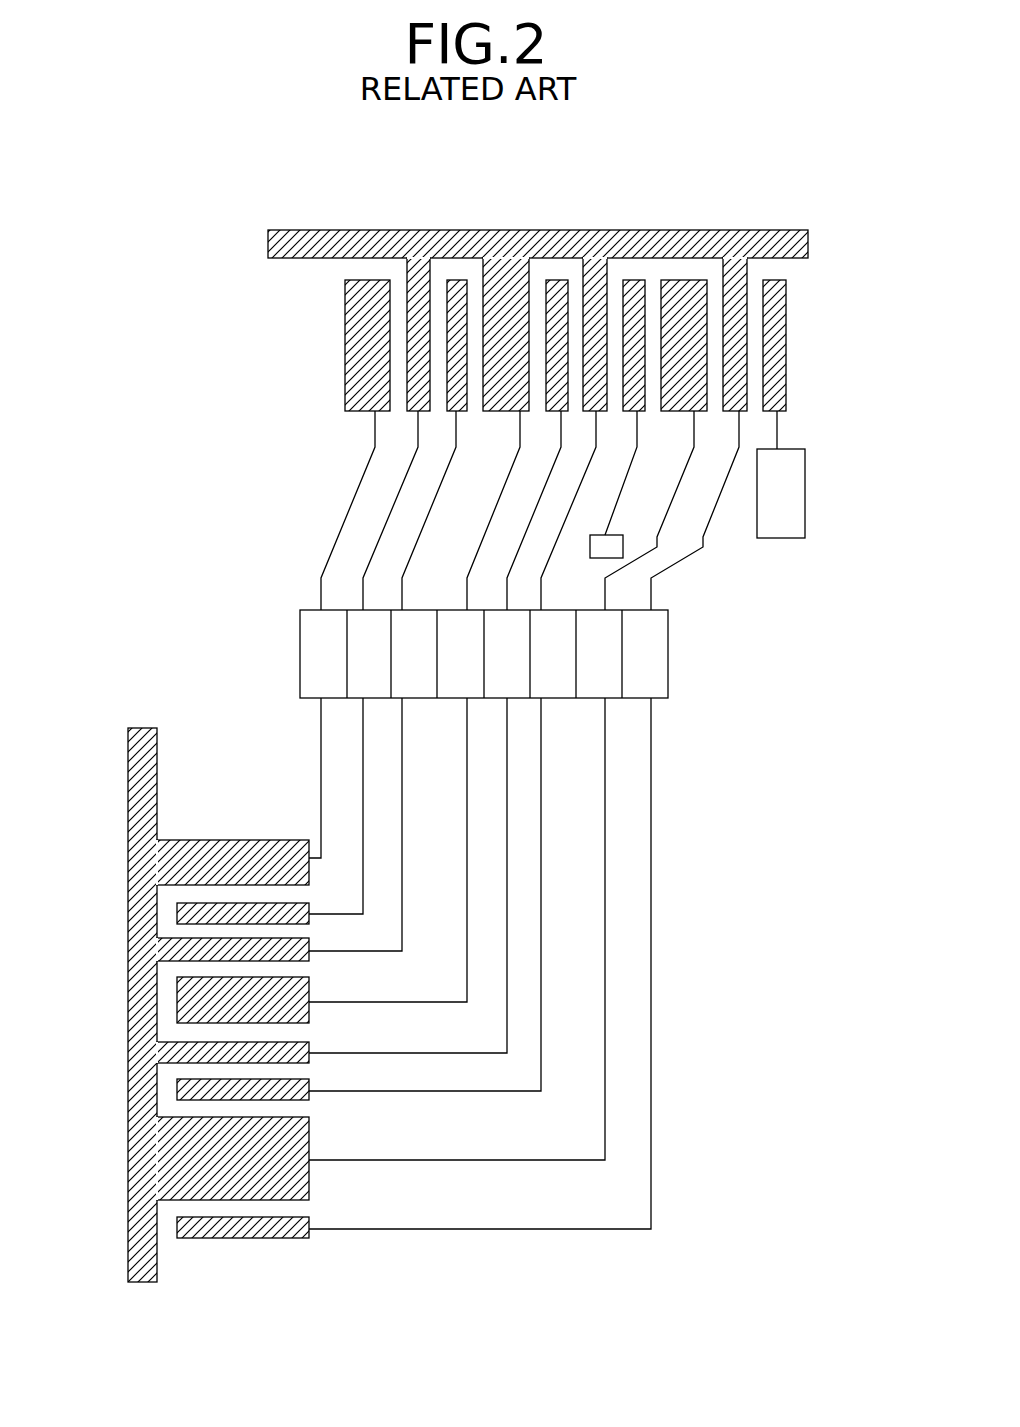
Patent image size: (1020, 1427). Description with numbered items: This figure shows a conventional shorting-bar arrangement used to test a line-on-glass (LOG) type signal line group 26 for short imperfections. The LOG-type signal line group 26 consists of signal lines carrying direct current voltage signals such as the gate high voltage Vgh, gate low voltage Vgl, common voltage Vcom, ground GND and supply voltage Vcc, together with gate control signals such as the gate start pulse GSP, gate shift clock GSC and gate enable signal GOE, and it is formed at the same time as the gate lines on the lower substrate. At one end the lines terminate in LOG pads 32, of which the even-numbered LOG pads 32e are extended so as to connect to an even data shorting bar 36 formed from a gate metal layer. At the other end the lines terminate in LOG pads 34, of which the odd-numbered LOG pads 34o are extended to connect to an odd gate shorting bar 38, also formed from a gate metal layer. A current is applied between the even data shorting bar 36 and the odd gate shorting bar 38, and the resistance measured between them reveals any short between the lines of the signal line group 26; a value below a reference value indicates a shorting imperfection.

The LOG-type signal line group 26 is at (707, 753).
The LOG pads 32 is at (790, 348).
The even-numbered LOG pads 32e is at (500, 277).
The LOG pads 34 is at (221, 810).
The odd-numbered LOG pads 34o is at (187, 865).
The even data shorting bar 36 is at (675, 236).
The odd gate shorting bar 38 is at (138, 783).